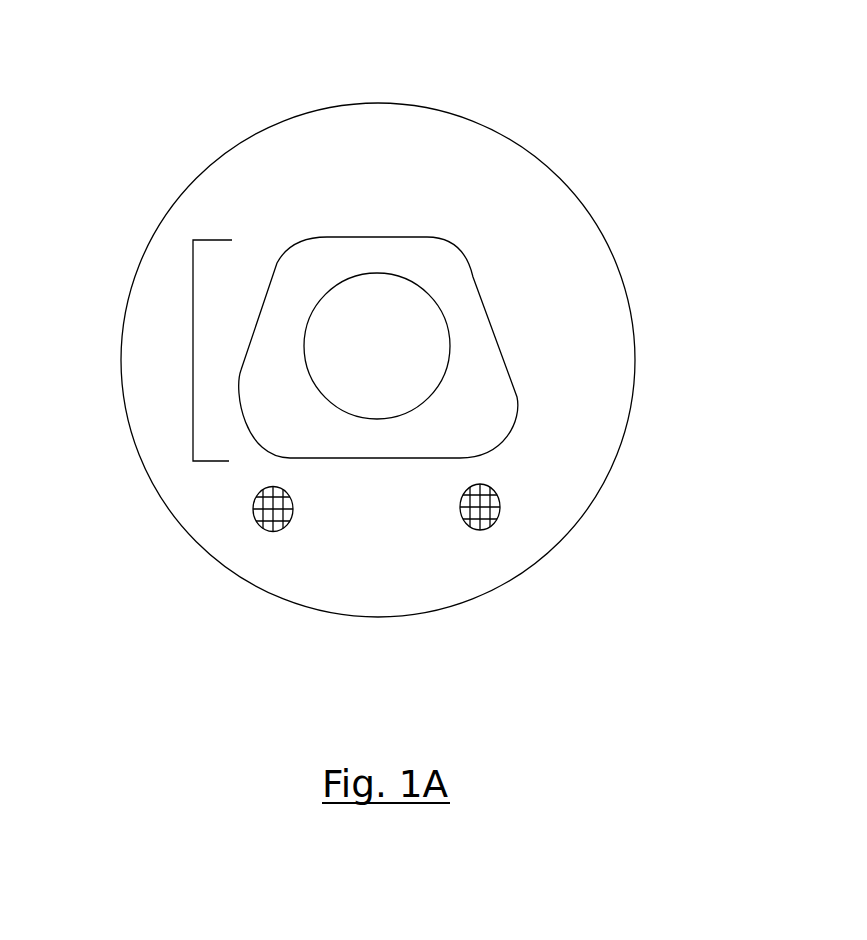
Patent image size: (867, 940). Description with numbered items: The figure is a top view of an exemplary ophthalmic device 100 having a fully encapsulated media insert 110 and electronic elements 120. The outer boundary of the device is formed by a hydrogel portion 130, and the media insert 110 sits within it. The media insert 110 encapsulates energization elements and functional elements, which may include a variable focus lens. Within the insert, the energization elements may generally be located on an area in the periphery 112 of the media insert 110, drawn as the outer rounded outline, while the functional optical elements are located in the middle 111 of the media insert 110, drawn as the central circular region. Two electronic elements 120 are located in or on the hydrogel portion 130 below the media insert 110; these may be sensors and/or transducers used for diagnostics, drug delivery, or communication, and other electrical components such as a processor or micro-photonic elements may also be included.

The ophthalmic device 100 is at (89, 32).
The hydrogel portion 130 is at (288, 187).
The media insert 110 is at (193, 360).
The periphery 112 is at (443, 268).
The middle 111 is at (425, 343).
The electronic elements 120 is at (500, 508).